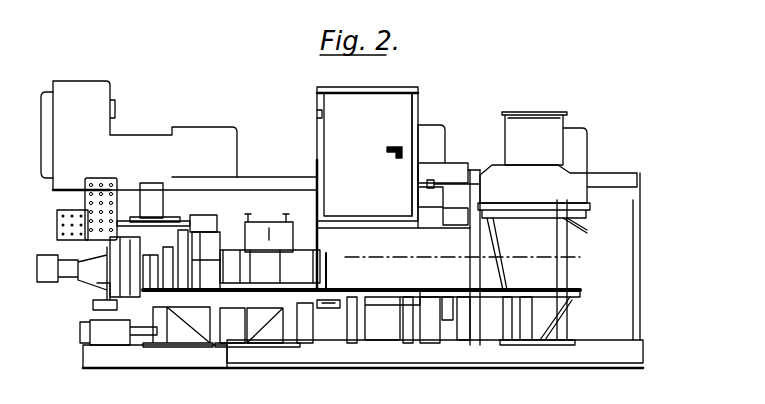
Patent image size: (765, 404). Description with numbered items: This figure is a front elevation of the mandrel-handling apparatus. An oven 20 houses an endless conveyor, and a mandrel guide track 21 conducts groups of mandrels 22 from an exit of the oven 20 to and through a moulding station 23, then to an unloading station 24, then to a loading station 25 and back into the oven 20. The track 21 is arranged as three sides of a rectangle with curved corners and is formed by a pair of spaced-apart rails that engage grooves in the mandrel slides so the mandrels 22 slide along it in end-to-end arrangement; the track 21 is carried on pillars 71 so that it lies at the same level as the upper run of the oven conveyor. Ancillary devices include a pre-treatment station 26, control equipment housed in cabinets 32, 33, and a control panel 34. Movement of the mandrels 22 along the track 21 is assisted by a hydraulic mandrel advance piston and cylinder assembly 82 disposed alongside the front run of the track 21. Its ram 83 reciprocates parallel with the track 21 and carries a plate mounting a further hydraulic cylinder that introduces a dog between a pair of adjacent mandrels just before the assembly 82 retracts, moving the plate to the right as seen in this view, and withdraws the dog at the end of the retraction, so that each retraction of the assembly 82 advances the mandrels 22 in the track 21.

The oven 20 is at (620, 290).
The mandrel guide track 21 is at (492, 290).
The mandrels 22 is at (548, 372).
The moulding station 23 is at (76, 291).
The unloading station 24 is at (264, 217).
The loading station 25 is at (537, 105).
The pre-treatment station 26 is at (152, 185).
The cabinet 32 is at (342, 100).
The cabinet 33 is at (72, 128).
The control panel 34 is at (72, 224).
The pillars 71 is at (153, 323).
The hydraulic mandrel advance piston and cylinder assembly 82 is at (388, 300).
The ram 83 is at (325, 308).